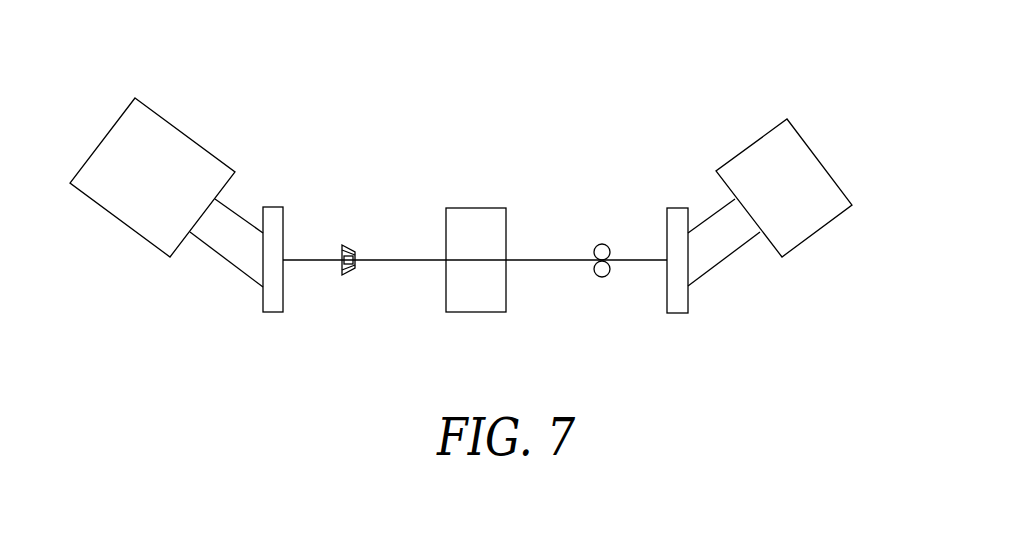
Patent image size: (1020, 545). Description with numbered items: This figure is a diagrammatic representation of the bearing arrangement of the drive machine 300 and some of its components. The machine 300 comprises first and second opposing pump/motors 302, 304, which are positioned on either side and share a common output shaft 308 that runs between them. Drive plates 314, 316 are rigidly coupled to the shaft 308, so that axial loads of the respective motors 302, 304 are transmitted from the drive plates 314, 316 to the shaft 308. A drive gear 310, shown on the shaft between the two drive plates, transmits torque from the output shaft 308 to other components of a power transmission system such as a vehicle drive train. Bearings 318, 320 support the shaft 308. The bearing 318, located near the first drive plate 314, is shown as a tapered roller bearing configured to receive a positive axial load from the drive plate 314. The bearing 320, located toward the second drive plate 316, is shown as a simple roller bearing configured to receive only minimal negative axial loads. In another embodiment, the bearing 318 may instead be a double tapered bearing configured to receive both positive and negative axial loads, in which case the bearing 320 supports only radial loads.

The drive machine 300 is at (387, 110).
The first pump/motor 302 is at (103, 138).
The second pump/motor 304 is at (820, 158).
The output shaft 308 is at (548, 258).
The drive gear 310 is at (478, 207).
The first drive plate 314 is at (273, 313).
The second drive plate 316 is at (678, 313).
The tapered roller bearing 318 is at (351, 246).
The roller bearing 320 is at (603, 243).